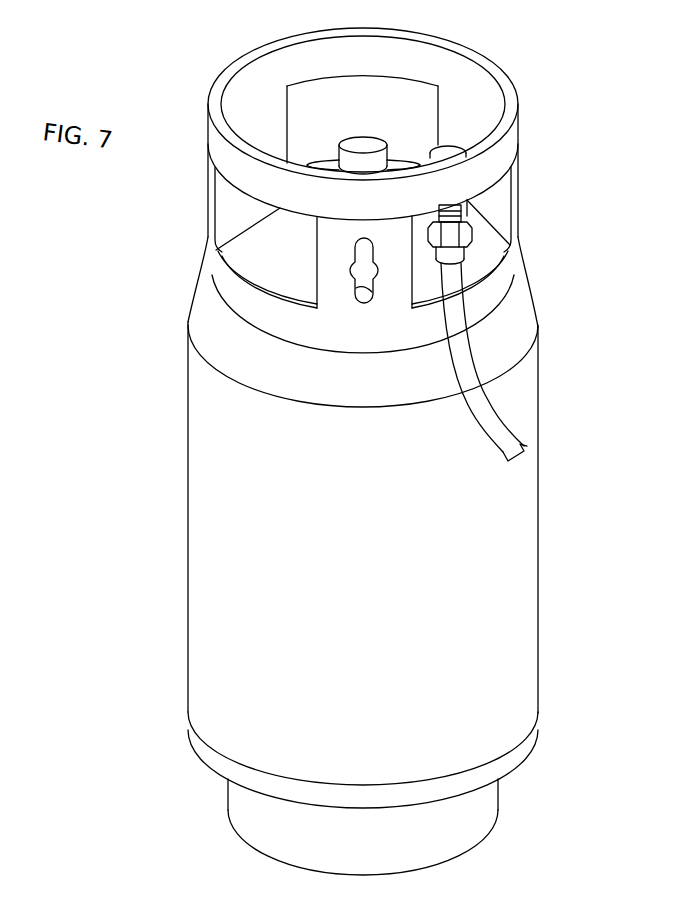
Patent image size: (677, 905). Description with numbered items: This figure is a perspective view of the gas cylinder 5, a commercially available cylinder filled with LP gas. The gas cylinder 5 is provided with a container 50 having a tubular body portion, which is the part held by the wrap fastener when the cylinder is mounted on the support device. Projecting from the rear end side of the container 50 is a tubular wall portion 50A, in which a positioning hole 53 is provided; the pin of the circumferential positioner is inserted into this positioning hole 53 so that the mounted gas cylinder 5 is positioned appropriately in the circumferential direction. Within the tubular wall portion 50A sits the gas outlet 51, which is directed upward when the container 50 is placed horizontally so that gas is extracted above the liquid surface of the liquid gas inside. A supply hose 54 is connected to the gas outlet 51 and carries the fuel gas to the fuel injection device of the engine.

The gas cylinder 5 is at (186, 447).
The container 50 is at (534, 580).
The tubular wall portion 50A is at (514, 85).
The gas outlet 51 is at (458, 238).
The positioning hole 53 is at (368, 303).
The supply hose 54 is at (482, 419).